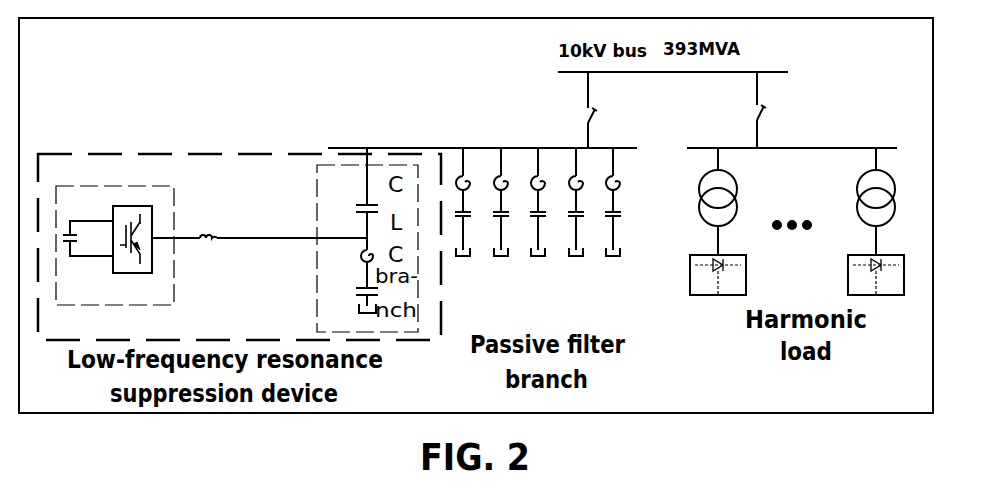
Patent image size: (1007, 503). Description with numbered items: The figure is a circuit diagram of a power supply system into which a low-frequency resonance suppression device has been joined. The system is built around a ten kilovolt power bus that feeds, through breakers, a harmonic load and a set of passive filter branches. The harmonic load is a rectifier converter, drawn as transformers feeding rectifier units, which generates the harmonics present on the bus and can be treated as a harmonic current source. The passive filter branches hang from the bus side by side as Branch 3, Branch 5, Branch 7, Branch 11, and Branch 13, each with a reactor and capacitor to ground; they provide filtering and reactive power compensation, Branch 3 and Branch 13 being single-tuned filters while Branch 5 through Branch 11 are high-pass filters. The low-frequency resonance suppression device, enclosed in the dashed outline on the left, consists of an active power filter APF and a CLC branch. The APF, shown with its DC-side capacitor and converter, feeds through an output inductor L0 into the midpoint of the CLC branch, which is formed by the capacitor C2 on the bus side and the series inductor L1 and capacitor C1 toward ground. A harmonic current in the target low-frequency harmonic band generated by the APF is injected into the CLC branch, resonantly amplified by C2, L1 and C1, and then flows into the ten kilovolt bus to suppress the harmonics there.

The active power filter APF is at (107, 253).
The output inductor L0 is at (208, 223).
The capacitor of CLC branch C2 is at (349, 204).
The inductor of CLC branch L1 is at (350, 260).
The capacitor of CLC branch C1 is at (352, 292).
The Branch 3 is at (463, 233).
The Branch 5 is at (501, 233).
The Branch 7 is at (538, 233).
The Branch 11 is at (576, 233).
The Branch 13 is at (613, 233).